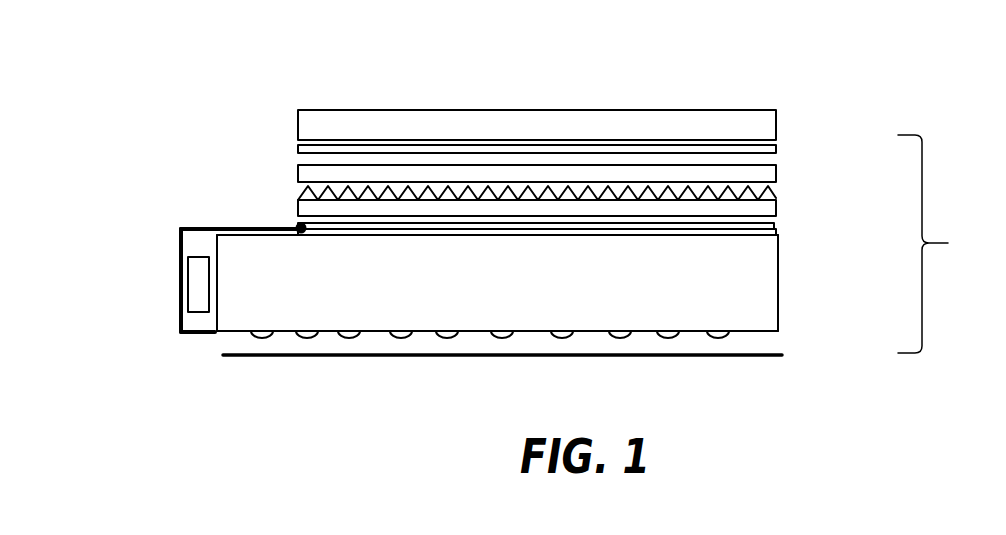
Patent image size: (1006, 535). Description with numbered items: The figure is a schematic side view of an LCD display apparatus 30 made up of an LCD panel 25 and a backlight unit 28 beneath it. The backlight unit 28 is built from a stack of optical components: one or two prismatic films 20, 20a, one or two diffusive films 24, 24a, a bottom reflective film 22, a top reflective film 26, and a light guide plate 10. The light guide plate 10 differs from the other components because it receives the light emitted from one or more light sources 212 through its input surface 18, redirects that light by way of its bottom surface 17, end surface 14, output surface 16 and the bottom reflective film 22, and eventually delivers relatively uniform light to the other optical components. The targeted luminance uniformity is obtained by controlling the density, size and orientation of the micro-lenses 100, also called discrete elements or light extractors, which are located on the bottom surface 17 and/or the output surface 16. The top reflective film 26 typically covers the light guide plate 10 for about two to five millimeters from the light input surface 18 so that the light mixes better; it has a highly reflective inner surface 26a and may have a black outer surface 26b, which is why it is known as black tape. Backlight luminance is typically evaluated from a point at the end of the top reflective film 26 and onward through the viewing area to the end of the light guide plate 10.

The LCD display apparatus 30 is at (240, 24).
The LCD panel 25 is at (585, 110).
The backlight unit 28 is at (937, 244).
The diffusive film 24a is at (782, 146).
The prismatic film 20a is at (782, 172).
The prismatic film 20 is at (782, 198).
The diffusive film 24 is at (774, 222).
The output surface 16 is at (727, 237).
The light guide plate 10 is at (497, 283).
The end surface 14 is at (778, 275).
The bottom surface 17 is at (745, 337).
The bottom reflective film 22 is at (515, 355).
The micro-lenses 100 is at (670, 335).
The top reflective film 26 is at (295, 227).
The inner surface 26a is at (222, 232).
The outer surface 26b is at (225, 227).
The light source 212 is at (200, 278).
The input surface 18 is at (214, 304).